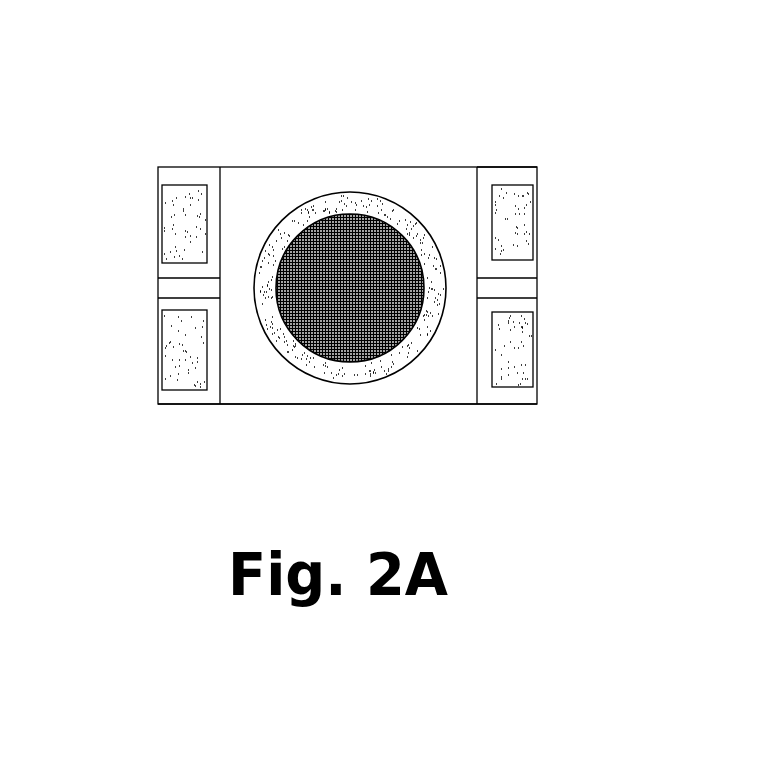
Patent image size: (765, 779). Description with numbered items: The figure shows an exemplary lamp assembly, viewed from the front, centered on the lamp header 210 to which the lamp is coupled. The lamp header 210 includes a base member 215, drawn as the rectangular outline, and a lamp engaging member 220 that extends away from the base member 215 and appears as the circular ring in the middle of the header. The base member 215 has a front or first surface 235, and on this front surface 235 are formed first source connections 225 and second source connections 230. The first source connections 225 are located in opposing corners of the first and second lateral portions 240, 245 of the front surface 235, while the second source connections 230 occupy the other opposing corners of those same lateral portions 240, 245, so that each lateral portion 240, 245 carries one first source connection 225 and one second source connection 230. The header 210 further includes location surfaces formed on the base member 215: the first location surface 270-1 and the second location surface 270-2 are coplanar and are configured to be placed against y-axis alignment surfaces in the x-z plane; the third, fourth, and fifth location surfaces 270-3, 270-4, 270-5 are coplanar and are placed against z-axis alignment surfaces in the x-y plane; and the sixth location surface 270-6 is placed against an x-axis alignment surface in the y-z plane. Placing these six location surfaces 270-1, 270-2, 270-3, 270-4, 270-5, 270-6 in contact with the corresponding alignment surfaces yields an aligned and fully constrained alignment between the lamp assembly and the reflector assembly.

The lamp header 210 is at (235, 42).
The base member 215 is at (348, 393).
The lamp engaging member 220 is at (410, 381).
The first source connections 225 is at (190, 222).
The second source connections 230 is at (507, 222).
The front surface 235 is at (349, 177).
The first lateral portion 240 is at (220, 288).
The second lateral portion 245 is at (478, 288).
The first location surface 270-1 is at (507, 418).
The second location surface 270-2 is at (195, 418).
The third location surface 270-3 is at (228, 377).
The fourth location surface 270-4 is at (237, 187).
The fifth location surface 270-5 is at (453, 208).
The sixth location surface 270-6 is at (487, 172).